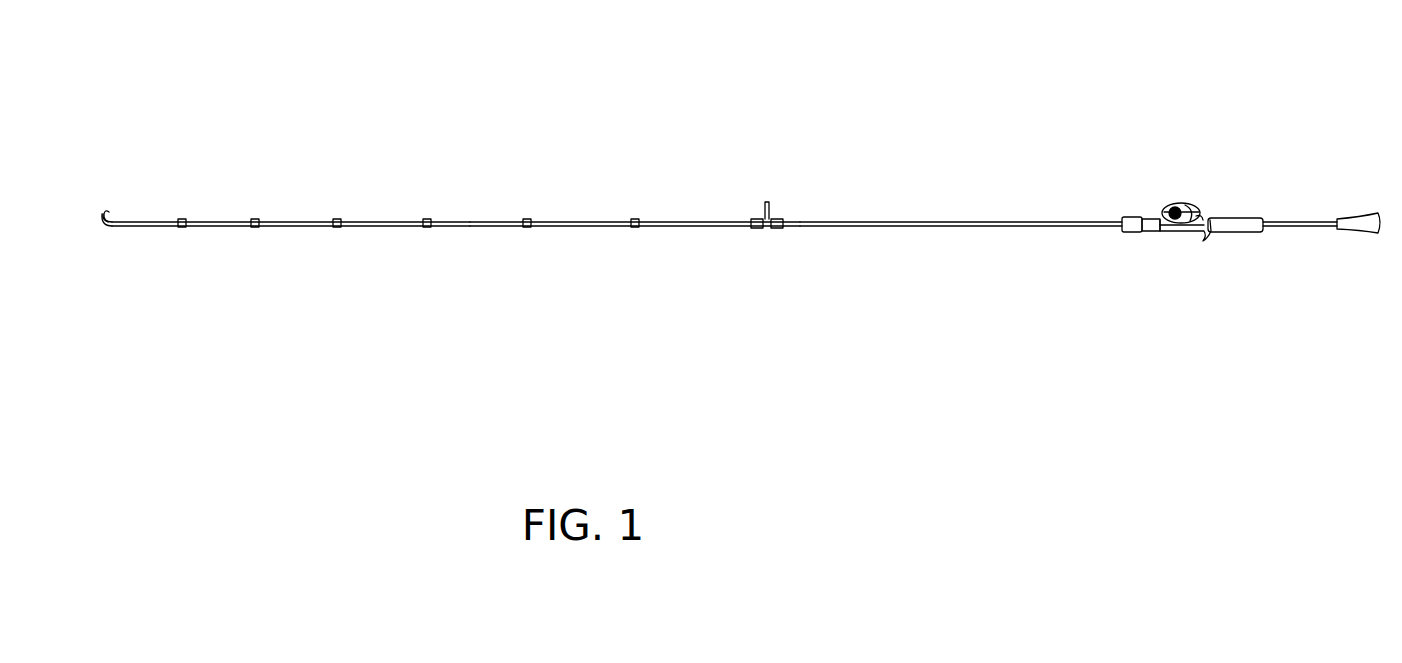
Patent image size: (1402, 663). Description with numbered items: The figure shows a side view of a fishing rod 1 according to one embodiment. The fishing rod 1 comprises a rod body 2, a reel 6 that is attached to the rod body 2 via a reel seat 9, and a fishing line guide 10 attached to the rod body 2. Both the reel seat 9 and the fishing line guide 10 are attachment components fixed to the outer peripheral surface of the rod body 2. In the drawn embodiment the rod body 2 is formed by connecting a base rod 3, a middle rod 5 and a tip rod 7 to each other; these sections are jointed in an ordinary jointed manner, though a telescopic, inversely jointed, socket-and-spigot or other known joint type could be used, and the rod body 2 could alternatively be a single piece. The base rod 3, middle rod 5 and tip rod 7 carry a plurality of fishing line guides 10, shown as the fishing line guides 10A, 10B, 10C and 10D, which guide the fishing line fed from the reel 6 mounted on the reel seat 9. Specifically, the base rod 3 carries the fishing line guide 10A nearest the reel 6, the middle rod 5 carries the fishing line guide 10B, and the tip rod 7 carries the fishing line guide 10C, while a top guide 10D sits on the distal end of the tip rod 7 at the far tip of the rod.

The fishing rod 1 is at (1078, 83).
The rod body 2 is at (363, 305).
The base rod 3 is at (995, 228).
The middle rod 5 is at (573, 228).
The reel 6 is at (1184, 200).
The tip rod 7 is at (373, 228).
The reel seat 9 is at (1190, 250).
The fishing line guide 10 is at (87, 97).
The fishing line guide 10A is at (762, 196).
The fishing line guide 10B is at (635, 219).
The fishing line guide 10C is at (337, 219).
The top guide 10D is at (106, 214).